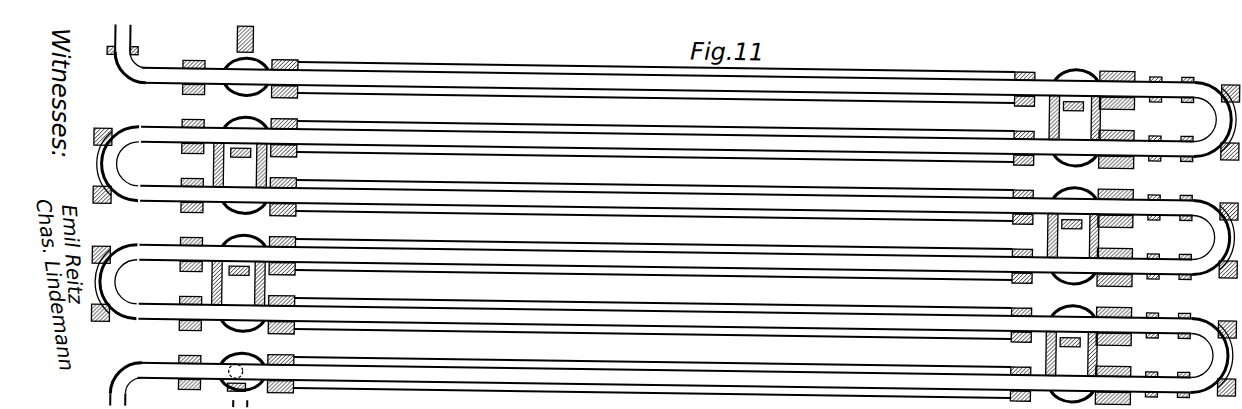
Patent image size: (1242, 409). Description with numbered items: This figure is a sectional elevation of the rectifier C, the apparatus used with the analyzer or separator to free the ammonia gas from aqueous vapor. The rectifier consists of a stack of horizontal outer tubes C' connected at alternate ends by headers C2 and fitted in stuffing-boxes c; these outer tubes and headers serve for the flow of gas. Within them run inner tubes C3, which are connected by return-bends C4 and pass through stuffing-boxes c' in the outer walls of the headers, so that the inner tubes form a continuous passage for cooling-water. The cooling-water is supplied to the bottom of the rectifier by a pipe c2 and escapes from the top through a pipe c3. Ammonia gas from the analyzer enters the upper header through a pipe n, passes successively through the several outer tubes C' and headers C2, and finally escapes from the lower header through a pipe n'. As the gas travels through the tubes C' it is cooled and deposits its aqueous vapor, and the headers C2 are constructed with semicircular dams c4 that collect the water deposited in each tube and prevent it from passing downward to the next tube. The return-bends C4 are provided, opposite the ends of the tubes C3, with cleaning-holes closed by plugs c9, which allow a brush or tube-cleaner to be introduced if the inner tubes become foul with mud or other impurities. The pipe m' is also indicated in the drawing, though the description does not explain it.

The rectifier C is at (659, 216).
The outer tubes C' is at (654, 221).
The headers C2 is at (649, 233).
The inner tubes C3 is at (666, 230).
The return-bends C4 is at (665, 230).
The stuffing-boxes c is at (651, 221).
The stuffing-boxes c' is at (660, 220).
The pipe c2 is at (128, 385).
The pipe c3 is at (132, 53).
The dams c4 is at (710, 235).
The plugs c9 is at (659, 225).
The pipe n is at (252, 38).
The pipe n' is at (248, 371).
The drain pipe m' is at (253, 401).